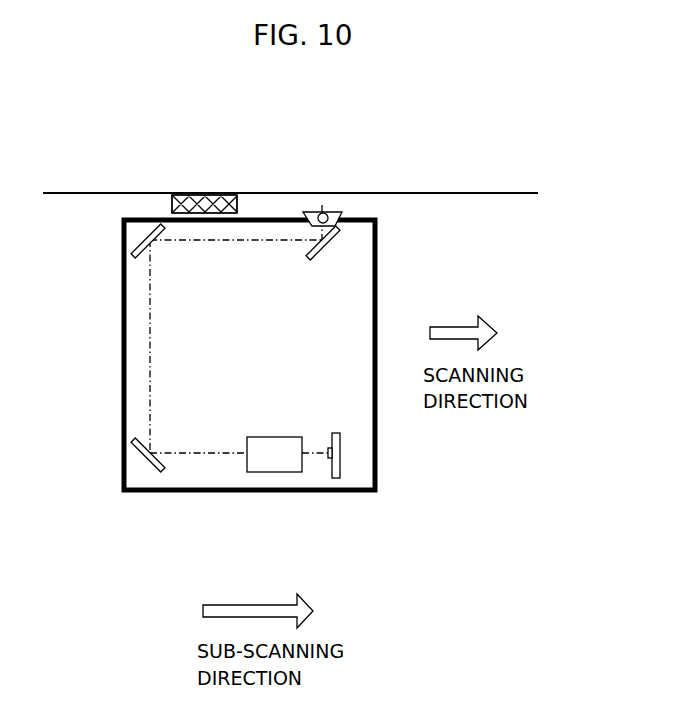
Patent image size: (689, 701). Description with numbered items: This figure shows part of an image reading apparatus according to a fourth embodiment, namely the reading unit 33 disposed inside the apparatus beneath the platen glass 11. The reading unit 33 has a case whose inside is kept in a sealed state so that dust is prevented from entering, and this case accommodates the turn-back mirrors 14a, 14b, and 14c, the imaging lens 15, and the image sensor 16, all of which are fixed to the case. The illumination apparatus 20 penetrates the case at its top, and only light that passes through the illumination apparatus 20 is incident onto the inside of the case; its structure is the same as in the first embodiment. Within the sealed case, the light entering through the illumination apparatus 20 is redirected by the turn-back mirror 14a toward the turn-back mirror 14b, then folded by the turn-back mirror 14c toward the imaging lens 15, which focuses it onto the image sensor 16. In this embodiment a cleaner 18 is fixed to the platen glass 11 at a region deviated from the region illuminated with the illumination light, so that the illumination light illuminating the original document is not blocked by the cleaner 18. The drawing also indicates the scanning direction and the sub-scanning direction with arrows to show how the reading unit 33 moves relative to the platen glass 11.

The platen glass 11 is at (518, 193).
The reading unit 33 is at (396, 456).
The cleaner 18 is at (202, 195).
The illumination apparatus 20 is at (335, 212).
The turn-back mirror 14a is at (322, 256).
The turn-back mirror 14b is at (143, 247).
The turn-back mirror 14c is at (143, 462).
The imaging lens 15 is at (275, 462).
The image sensor 16 is at (342, 455).